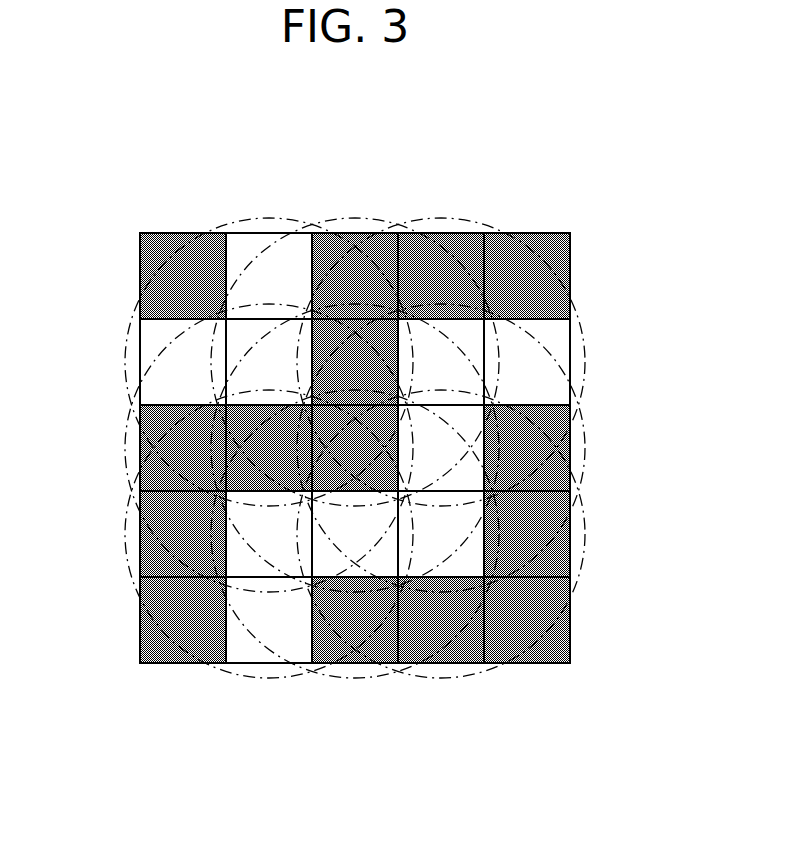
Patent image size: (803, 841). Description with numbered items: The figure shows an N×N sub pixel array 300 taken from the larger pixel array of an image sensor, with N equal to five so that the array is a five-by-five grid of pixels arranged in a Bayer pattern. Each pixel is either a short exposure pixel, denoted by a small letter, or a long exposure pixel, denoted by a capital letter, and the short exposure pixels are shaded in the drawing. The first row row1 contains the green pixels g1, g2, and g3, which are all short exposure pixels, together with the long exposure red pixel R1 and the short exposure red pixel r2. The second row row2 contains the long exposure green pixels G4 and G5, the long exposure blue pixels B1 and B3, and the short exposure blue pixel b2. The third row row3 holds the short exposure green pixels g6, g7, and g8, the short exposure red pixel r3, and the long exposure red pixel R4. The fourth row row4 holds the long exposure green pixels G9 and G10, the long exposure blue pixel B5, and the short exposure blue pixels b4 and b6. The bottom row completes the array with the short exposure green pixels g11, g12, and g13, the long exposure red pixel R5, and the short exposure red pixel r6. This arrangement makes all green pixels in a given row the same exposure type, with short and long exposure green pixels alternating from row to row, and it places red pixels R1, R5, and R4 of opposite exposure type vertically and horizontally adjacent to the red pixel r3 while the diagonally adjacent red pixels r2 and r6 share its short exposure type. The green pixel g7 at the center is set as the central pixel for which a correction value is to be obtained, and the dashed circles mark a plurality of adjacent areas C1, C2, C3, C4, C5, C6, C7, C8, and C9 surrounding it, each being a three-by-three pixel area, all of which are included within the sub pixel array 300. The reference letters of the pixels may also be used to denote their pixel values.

The N×N sub pixel array 300 is at (519, 157).
The adjacent area C1 is at (267, 217).
The adjacent area C2 is at (354, 217).
The adjacent area C3 is at (439, 217).
The adjacent area C4 is at (168, 665).
The adjacent area C5 is at (584, 470).
The adjacent area C6 is at (586, 446).
The adjacent area C7 is at (268, 680).
The adjacent area C8 is at (355, 680).
The adjacent area C9 is at (440, 680).
The first row row1 is at (111, 234).
The second row row2 is at (111, 320).
The third row row3 is at (111, 406).
The fourth row row4 is at (111, 492).
The short exposure green pixel g1 is at (183, 276).
The long exposure red pixel R1 is at (269, 276).
The short exposure green pixel g2 is at (355, 276).
The short exposure red pixel r2 is at (441, 276).
The short exposure green pixel g3 is at (527, 276).
The long exposure blue pixel B1 is at (183, 362).
The long exposure green pixel G4 is at (269, 362).
The short exposure blue pixel b2 is at (355, 362).
The long exposure green pixel G5 is at (441, 362).
The long exposure blue pixel B3 is at (527, 362).
The short exposure green pixel g6 is at (183, 448).
The short exposure red pixel r3 is at (269, 448).
The central pixel g7 is at (355, 448).
The long exposure red pixel R4 is at (441, 448).
The short exposure green pixel g8 is at (527, 448).
The short exposure blue pixel b4 is at (183, 534).
The long exposure green pixel G9 is at (269, 534).
The long exposure blue pixel B5 is at (355, 534).
The long exposure green pixel G10 is at (441, 534).
The short exposure blue pixel b6 is at (527, 534).
The short exposure green pixel g11 is at (183, 620).
The long exposure red pixel R5 is at (269, 620).
The short exposure green pixel g12 is at (355, 620).
The short exposure red pixel r6 is at (441, 620).
The short exposure green pixel g13 is at (527, 620).